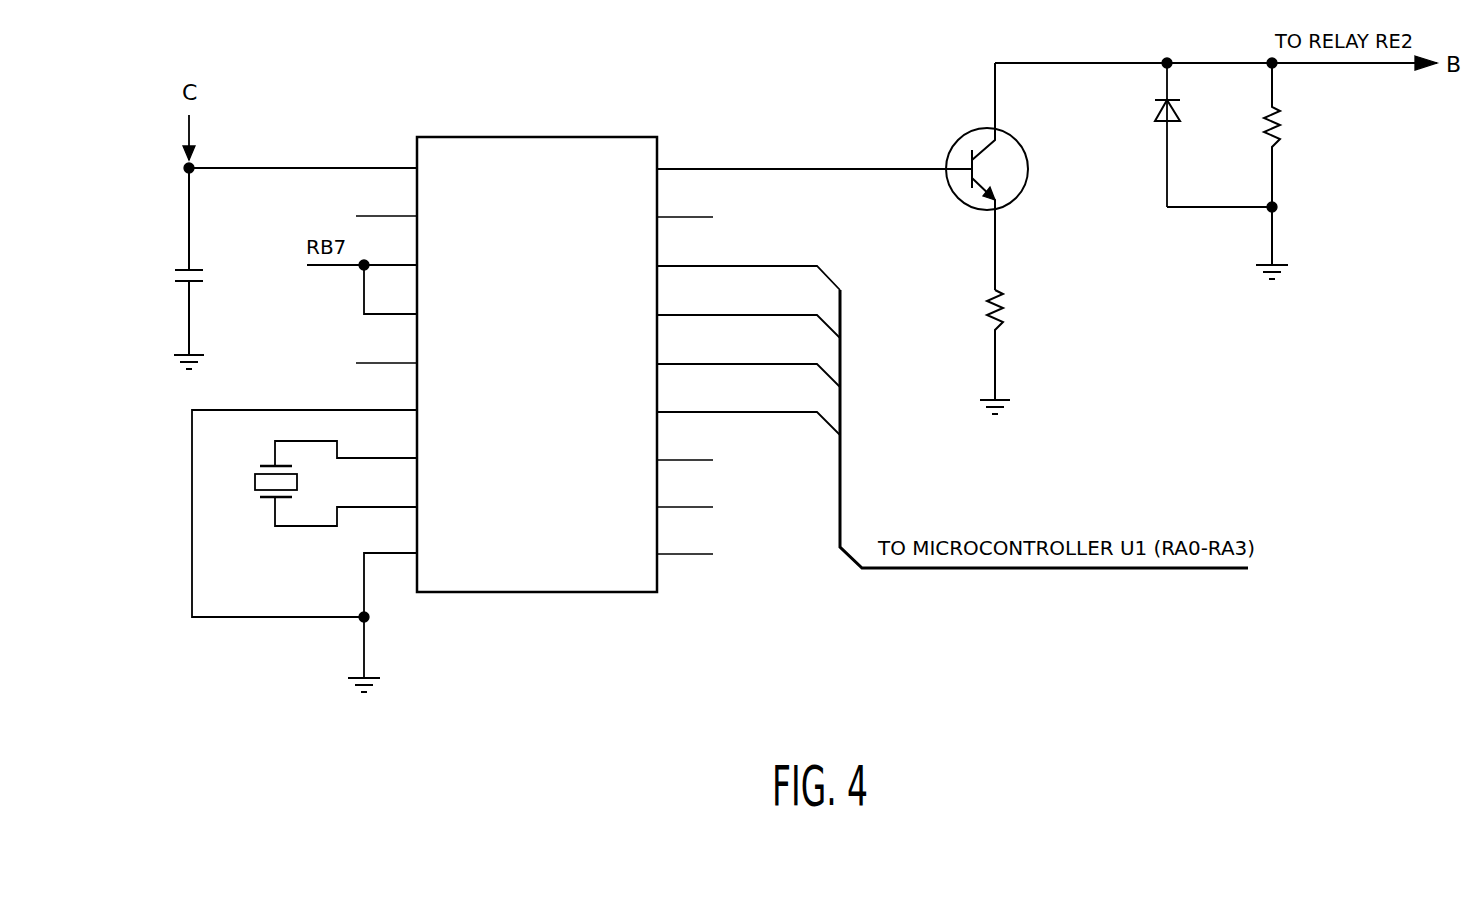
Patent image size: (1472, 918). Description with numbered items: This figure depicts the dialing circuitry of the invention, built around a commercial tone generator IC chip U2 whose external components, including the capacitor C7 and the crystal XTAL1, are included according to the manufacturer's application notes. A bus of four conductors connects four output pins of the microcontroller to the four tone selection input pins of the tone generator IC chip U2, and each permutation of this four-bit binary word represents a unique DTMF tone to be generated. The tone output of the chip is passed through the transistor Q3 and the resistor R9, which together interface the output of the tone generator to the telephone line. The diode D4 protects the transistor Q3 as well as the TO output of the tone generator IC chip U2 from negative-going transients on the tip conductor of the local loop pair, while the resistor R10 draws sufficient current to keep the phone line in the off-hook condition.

The tone generator IC chip U2 is at (534, 335).
The .01 uF capacitor C7 is at (203, 268).
The 3.579 MHz crystal XTAL1 is at (308, 513).
The transistor Q3 is at (1026, 176).
The resistor R9 is at (1025, 351).
The diode D4 is at (1147, 135).
The resistor R10 is at (1295, 171).